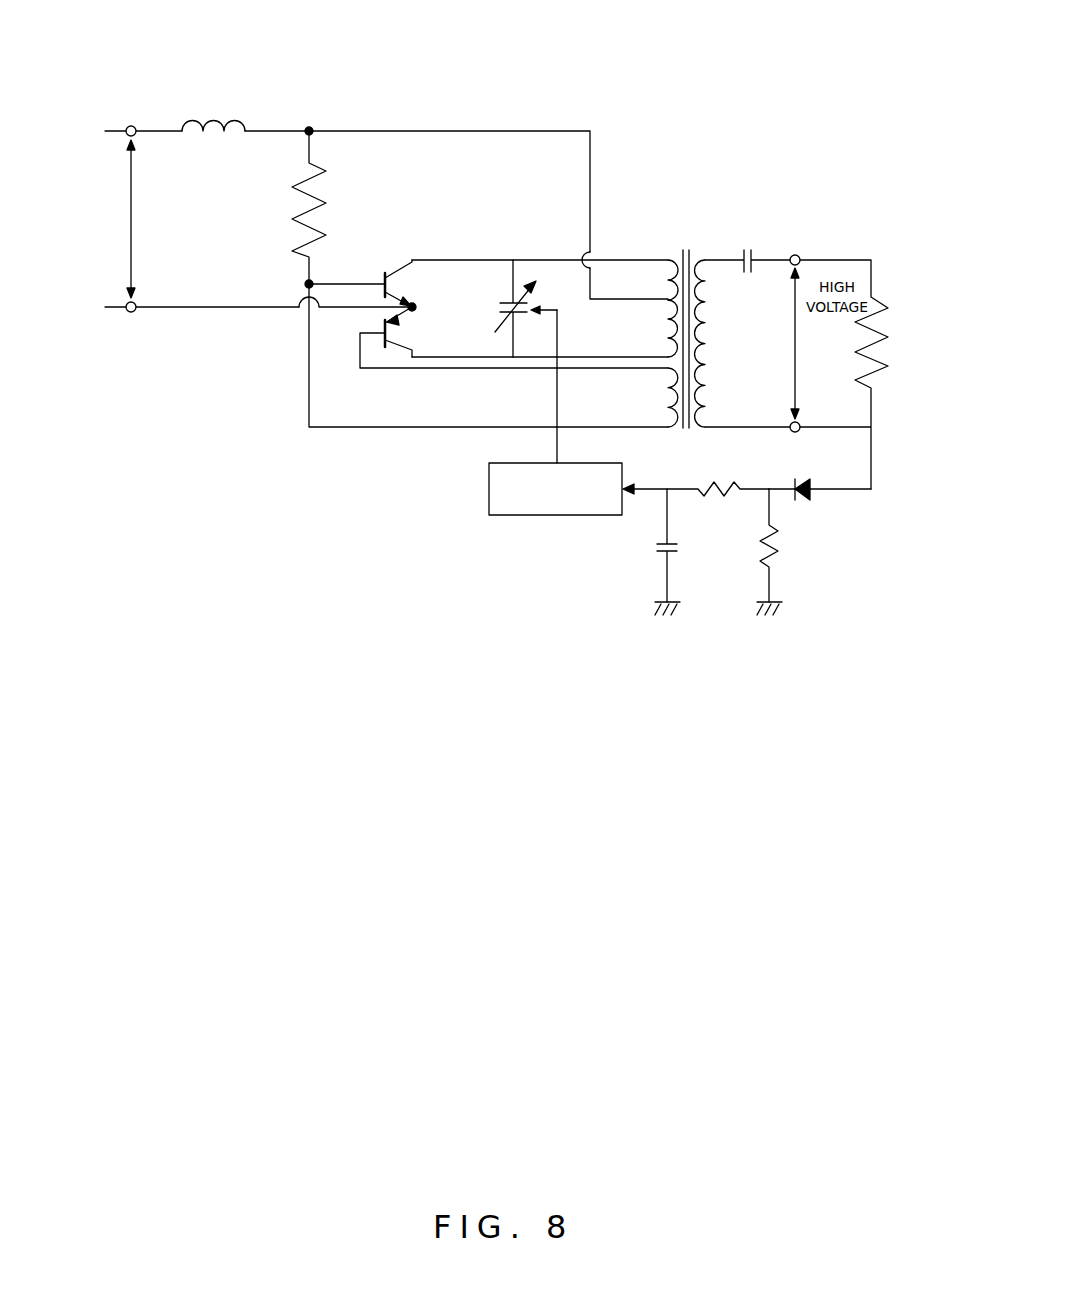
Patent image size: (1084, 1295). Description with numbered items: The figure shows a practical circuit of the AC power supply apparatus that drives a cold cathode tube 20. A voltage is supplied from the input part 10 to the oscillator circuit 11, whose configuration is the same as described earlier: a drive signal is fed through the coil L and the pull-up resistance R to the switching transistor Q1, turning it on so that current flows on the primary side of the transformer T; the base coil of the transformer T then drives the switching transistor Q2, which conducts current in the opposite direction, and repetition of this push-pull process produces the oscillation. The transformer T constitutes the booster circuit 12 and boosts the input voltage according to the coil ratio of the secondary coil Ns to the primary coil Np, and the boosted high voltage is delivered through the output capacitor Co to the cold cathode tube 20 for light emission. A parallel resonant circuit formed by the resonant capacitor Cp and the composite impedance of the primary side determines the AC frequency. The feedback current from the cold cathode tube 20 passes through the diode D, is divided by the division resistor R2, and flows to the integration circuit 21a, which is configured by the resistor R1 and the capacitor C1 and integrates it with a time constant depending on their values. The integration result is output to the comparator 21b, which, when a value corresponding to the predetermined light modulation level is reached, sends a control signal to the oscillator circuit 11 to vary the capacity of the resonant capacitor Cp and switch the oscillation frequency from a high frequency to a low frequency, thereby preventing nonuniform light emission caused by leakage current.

The input part 10 is at (175, 219).
The oscillator circuit 11 is at (425, 239).
The booster circuit 12 is at (693, 287).
The cold cathode tube 20 is at (895, 337).
The integration circuit 21a is at (781, 529).
The comparator 21b is at (489, 495).
The coil L is at (228, 112).
The pull-up resistance R is at (333, 212).
The switching transistor Q1 is at (396, 264).
The switching transistor Q2 is at (400, 350).
The resonant capacitor Cp is at (516, 308).
The primary coil Np is at (644, 343).
The secondary coil Ns is at (717, 343).
The transformer T is at (684, 331).
The output capacitor Co is at (747, 252).
The diode D is at (812, 478).
The resistor R1 is at (720, 476).
The division resistor R2 is at (783, 545).
The capacitor C1 is at (680, 547).